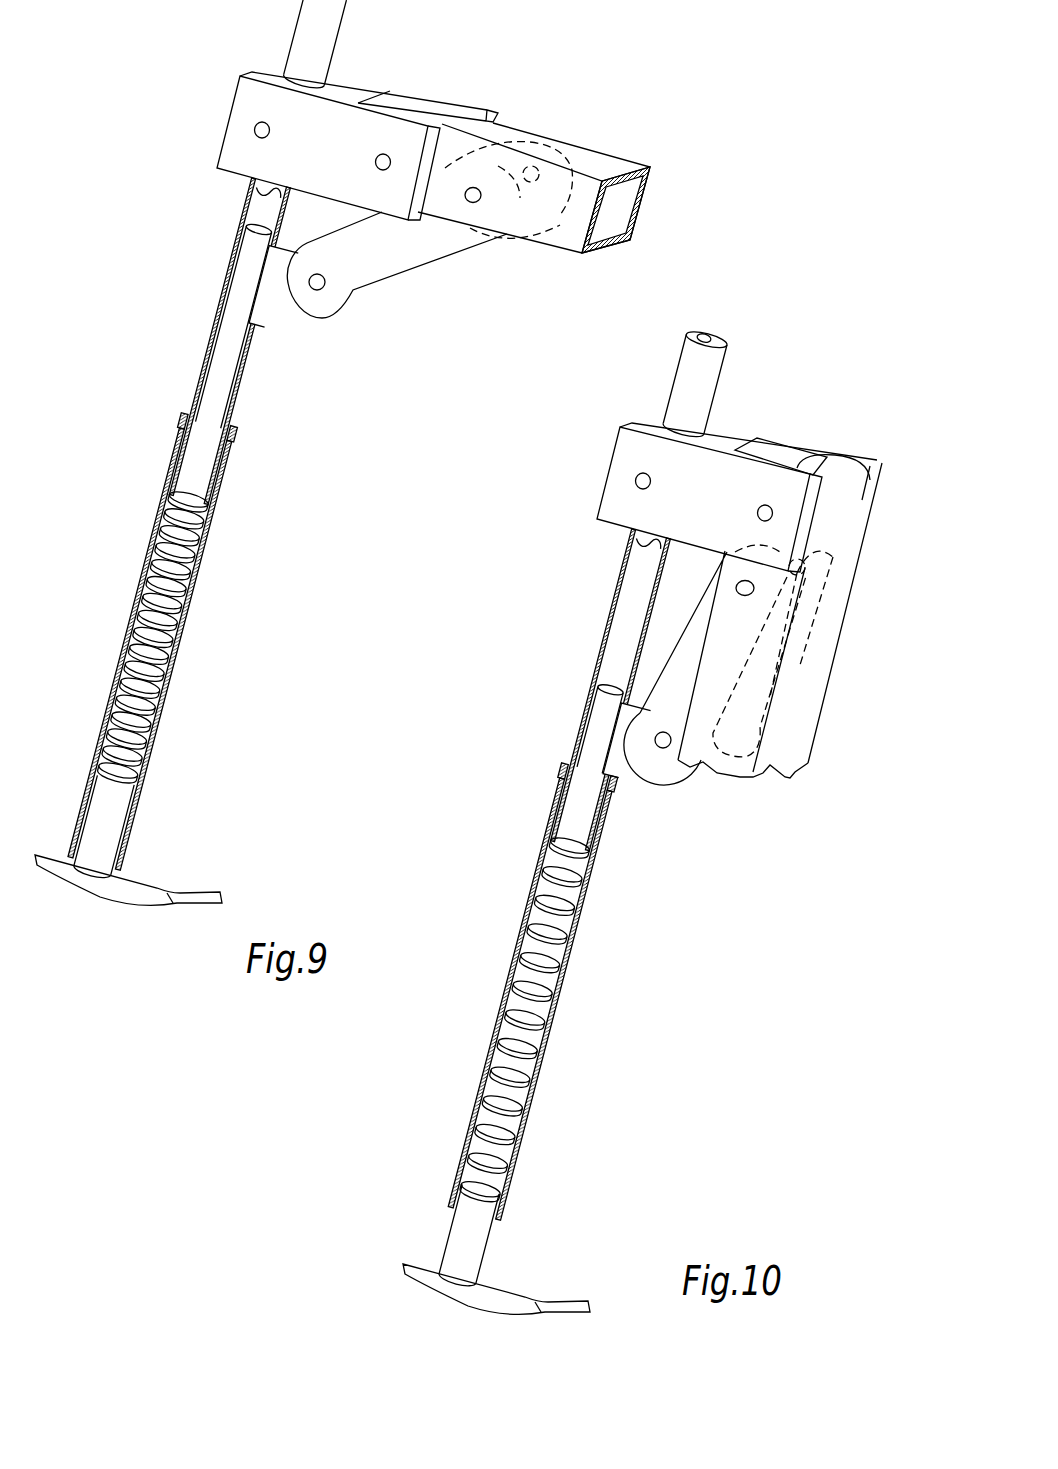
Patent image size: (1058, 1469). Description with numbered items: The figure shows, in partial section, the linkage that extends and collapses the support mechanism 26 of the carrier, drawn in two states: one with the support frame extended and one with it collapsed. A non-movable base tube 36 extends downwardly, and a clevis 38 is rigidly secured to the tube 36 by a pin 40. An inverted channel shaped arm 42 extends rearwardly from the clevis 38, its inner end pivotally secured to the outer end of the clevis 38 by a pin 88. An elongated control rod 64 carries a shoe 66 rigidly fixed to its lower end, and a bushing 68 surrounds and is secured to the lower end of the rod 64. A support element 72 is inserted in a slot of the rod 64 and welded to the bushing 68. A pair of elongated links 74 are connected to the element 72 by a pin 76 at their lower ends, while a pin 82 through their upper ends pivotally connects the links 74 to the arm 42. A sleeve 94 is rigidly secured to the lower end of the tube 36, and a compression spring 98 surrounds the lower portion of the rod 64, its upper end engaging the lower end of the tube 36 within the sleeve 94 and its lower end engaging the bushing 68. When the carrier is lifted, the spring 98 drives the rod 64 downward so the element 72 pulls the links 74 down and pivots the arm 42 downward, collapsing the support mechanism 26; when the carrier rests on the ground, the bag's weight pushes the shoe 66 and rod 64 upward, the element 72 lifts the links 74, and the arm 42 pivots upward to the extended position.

In FIG. 9, the support mechanism 26 is at (189, 452).
In FIG. 10, the support mechanism 26 is at (561, 821).
In FIG. 9, the base tube 36 is at (303, 40).
In FIG. 10, the base tube 36 is at (690, 393).
In FIG. 9, the clevis 38 is at (336, 146).
In FIG. 10, the clevis 38 is at (716, 497).
In FIG. 9, the pin 40 is at (256, 133).
In FIG. 10, the pin 40 is at (638, 484).
In FIG. 9, the inverted channel shaped arm 42 is at (540, 200).
In FIG. 10, the inverted channel shaped arm 42 is at (714, 591).
In FIG. 9, the control rod 64 is at (238, 300).
In FIG. 10, the control rod 64 is at (607, 720).
In FIG. 9, the shoe 66 is at (150, 890).
In FIG. 10, the shoe 66 is at (517, 1300).
In FIG. 9, the bushing 68 is at (105, 822).
In FIG. 10, the bushing 68 is at (462, 1228).
In FIG. 9, the support element 72 is at (276, 318).
In FIG. 10, the support element 72 is at (632, 772).
In FIG. 9, the links 74 is at (440, 229).
In FIG. 10, the links 74 is at (692, 681).
In FIG. 9, the pin 76 is at (318, 291).
In FIG. 10, the pin 76 is at (665, 748).
In FIG. 9, the pin 82 is at (472, 205).
In FIG. 10, the pin 82 is at (736, 588).
In FIG. 9, the pin 88 is at (380, 156).
In FIG. 10, the pin 88 is at (762, 506).
In FIG. 9, the sleeve 94 is at (178, 465).
In FIG. 10, the sleeve 94 is at (560, 805).
In FIG. 9, the compression spring 98 is at (160, 577).
In FIG. 10, the compression spring 98 is at (535, 932).